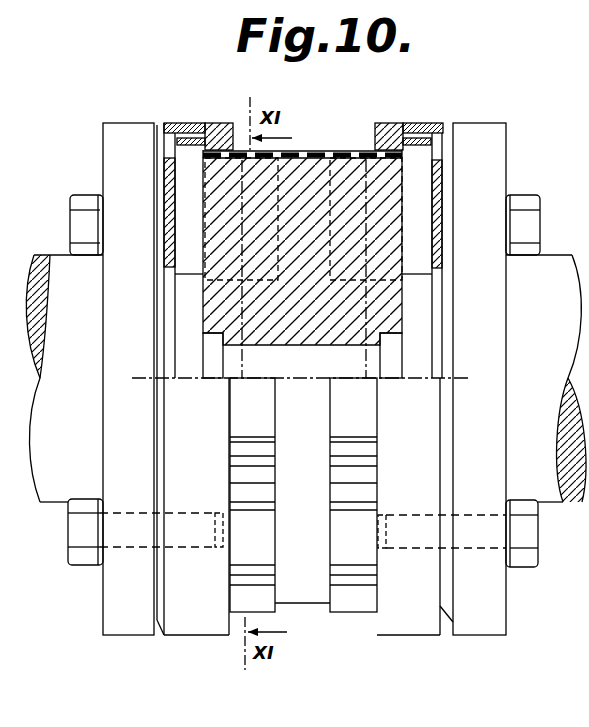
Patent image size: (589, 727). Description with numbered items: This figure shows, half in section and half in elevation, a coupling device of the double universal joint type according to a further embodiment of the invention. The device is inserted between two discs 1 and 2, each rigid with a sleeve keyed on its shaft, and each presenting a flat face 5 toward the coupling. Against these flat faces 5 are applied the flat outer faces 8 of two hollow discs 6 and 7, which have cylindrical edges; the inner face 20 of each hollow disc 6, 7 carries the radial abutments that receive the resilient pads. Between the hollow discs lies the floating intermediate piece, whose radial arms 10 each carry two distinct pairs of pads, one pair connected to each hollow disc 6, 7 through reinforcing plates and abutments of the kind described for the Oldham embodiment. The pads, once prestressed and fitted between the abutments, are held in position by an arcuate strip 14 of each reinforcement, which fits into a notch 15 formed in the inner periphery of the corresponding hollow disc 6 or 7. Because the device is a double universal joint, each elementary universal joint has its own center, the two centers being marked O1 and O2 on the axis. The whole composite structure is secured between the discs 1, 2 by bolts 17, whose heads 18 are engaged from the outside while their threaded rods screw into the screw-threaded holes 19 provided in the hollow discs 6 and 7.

The disc 1 is at (122, 162).
The disc 2 is at (479, 152).
The flat face 5 is at (170, 262).
The hollow disc 6 is at (168, 210).
The hollow disc 7 is at (441, 158).
The outer face 8 is at (438, 607).
The radial arm 10 is at (310, 188).
The arcuate strip 14 is at (198, 142).
The notch 15 is at (171, 128).
The bolt 17 is at (140, 547).
The bolt head 18 is at (82, 222).
The screw-threaded hole 19 is at (223, 514).
The inner face 20 is at (182, 205).
The center of elementary universal joint O1 is at (243, 378).
The center of elementary universal joint O2 is at (366, 378).